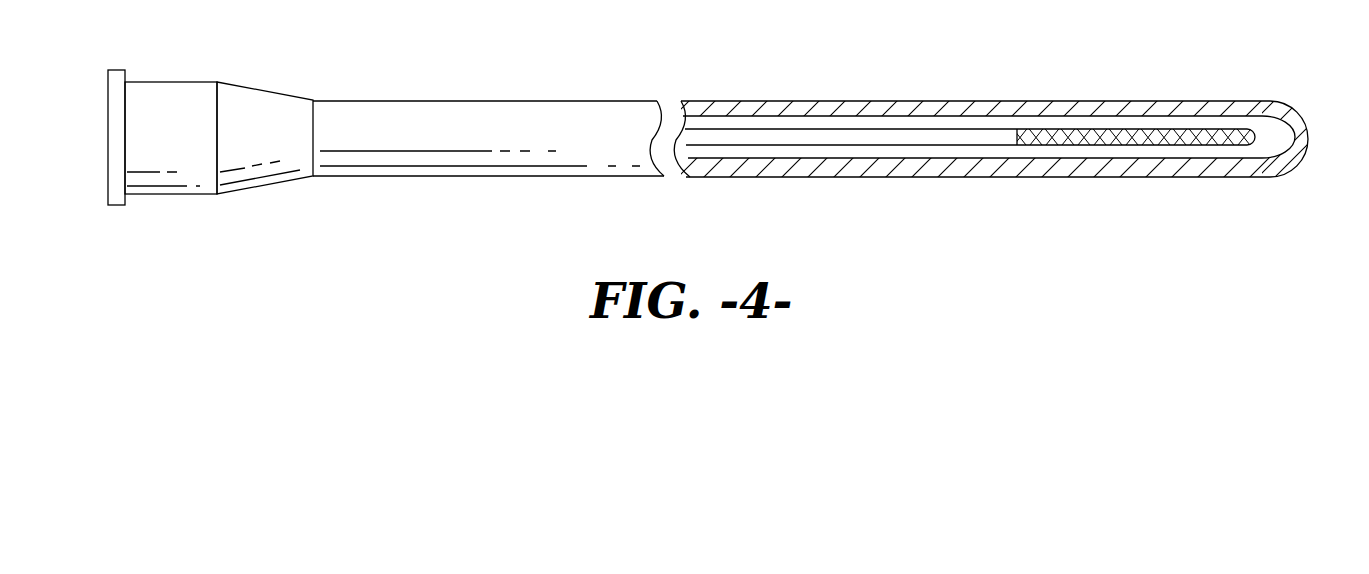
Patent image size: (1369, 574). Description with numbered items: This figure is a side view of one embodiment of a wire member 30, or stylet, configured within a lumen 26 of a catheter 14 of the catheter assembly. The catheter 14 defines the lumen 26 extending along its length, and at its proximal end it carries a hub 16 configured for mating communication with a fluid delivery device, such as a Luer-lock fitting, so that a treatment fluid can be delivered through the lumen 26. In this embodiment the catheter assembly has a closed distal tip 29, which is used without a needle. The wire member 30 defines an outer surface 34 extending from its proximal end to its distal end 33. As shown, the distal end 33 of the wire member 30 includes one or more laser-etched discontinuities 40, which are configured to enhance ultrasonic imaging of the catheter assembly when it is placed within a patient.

The hub 16 is at (168, 78).
The catheter 14 is at (877, 96).
The lumen 26 is at (970, 125).
The outer surface 34 is at (775, 138).
The distal end 33 is at (1085, 135).
The wire member 30 is at (1155, 132).
The laser-etched discontinuities 40 is at (1228, 130).
The closed distal tip 29 is at (1310, 138).